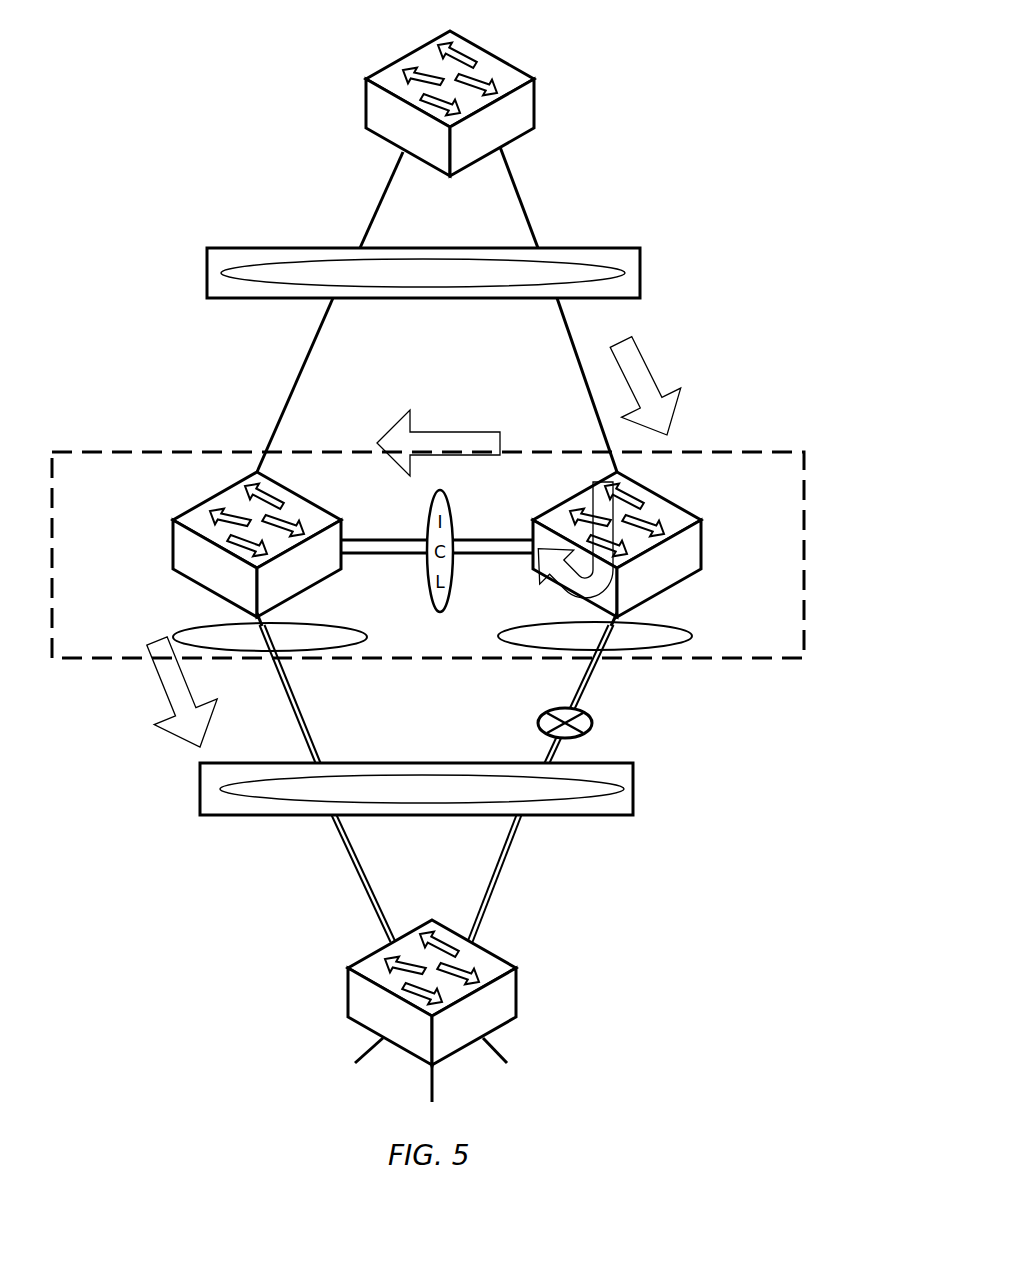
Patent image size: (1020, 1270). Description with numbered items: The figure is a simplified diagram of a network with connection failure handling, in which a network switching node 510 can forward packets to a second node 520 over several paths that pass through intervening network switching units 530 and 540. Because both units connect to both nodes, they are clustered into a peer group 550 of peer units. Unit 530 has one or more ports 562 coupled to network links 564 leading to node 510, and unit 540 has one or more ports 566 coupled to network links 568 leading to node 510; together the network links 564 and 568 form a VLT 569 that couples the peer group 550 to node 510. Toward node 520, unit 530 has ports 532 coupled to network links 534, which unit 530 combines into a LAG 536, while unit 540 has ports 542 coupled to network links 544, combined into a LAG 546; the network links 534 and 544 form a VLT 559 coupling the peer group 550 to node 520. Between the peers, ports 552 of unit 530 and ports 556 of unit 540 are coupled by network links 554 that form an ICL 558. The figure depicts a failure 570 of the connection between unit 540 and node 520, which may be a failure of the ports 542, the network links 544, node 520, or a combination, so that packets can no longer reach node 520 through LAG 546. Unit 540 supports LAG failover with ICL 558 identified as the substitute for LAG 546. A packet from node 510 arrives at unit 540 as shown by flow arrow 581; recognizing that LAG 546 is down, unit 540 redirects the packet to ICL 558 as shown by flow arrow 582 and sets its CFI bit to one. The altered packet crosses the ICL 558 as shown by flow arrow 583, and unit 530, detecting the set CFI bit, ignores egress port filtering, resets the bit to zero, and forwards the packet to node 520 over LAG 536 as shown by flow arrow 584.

The node 510 is at (499, 103).
The node 520 is at (489, 1011).
The unit 530 is at (211, 544).
The unit 540 is at (659, 544).
The peer group 550 is at (806, 570).
The VLT 569 is at (423, 273).
The VLT 559 is at (416, 789).
The LAG 536 is at (270, 637).
The LAG 546 is at (595, 636).
The ports 532 is at (215, 615).
The network links 534 is at (290, 713).
The ports 542 is at (620, 616).
The network links 544 is at (503, 873).
The ports 552 is at (345, 537).
The network links 554 is at (392, 556).
The ports 556 is at (533, 537).
The ICL 558 is at (453, 598).
The ports 562 is at (250, 470).
The network links 564 is at (375, 206).
The ports 566 is at (615, 474).
The network links 568 is at (532, 190).
The failure 570 is at (592, 722).
The flow arrow 581 is at (653, 362).
The flow arrow 582 is at (557, 600).
The flow arrow 583 is at (438, 432).
The flow arrow 584 is at (153, 668).